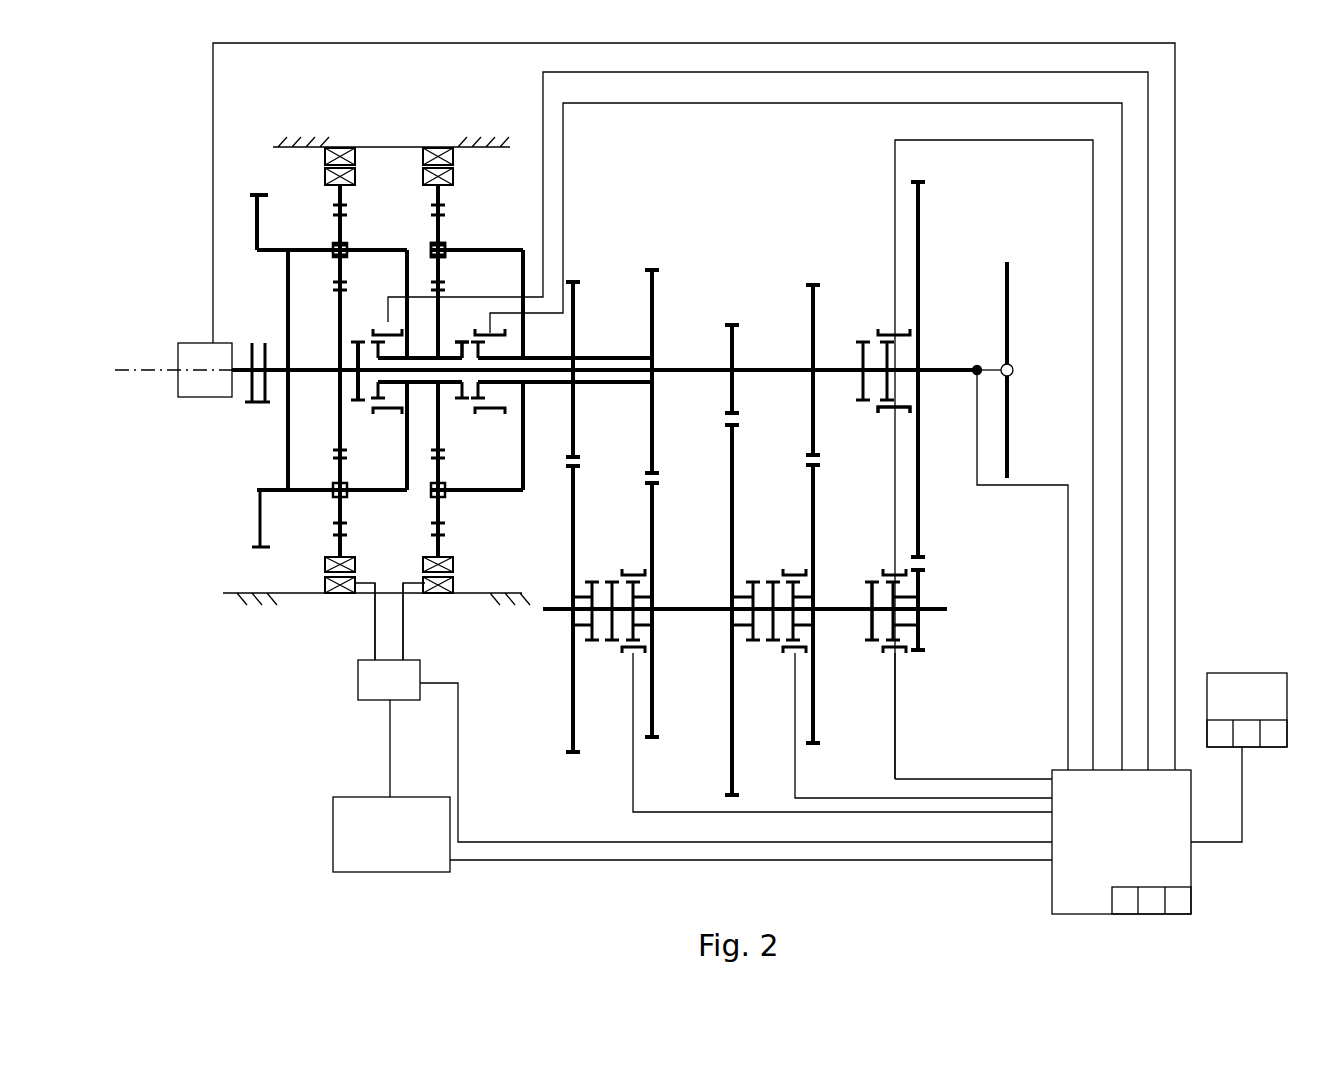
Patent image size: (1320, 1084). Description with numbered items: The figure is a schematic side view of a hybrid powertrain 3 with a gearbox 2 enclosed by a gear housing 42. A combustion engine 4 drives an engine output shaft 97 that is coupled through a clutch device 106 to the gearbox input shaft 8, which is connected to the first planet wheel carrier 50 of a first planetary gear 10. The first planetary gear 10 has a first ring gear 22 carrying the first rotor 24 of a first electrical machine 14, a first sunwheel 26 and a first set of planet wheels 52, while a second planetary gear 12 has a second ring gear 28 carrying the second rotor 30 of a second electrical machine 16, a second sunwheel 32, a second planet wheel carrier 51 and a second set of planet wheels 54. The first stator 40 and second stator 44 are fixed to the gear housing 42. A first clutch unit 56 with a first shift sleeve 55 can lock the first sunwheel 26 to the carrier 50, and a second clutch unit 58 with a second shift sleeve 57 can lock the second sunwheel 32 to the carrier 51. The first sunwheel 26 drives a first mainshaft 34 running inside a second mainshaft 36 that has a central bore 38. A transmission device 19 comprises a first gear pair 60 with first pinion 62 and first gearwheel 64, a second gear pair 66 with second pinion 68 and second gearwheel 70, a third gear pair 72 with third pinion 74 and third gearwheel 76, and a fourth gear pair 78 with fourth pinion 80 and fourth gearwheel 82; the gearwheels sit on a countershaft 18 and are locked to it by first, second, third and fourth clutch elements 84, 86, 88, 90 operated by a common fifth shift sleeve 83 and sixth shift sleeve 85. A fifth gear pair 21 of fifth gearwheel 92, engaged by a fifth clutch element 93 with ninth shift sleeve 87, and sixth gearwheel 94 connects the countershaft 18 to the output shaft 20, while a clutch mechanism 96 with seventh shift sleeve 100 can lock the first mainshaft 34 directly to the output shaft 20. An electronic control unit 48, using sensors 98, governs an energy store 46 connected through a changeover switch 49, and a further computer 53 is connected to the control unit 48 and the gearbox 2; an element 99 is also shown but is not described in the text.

The gearbox 2 is at (1190, 122).
The hybrid powertrain 3 is at (272, 688).
The combustion engine 4 is at (190, 343).
The input shaft 8 is at (266, 344).
The first planetary gear 10 is at (200, 200).
The second planetary gear 12 is at (565, 190).
The first electrical machine 14 is at (205, 128).
The second electrical machine 16 is at (508, 172).
The countershaft 18 is at (710, 615).
The transmission device 19 is at (730, 210).
The output shaft 20 is at (948, 363).
The fifth gear pair 21 is at (955, 560).
The first ring gear 22 is at (330, 208).
The first rotor 24 is at (356, 165).
The first sunwheel 26 is at (338, 395).
The second ring gear 28 is at (445, 208).
The second rotor 30 is at (432, 165).
The second sunwheel 32 is at (440, 328).
The first mainshaft 34 is at (780, 367).
The second mainshaft 36 is at (552, 386).
The central bore 38 is at (655, 375).
The first stator 40 is at (322, 152).
The gear housing 42 is at (423, 152).
The second stator 44 is at (453, 160).
The energy store 46 is at (417, 797).
The electronic control unit 48 is at (1060, 770).
The changeover switch 49 is at (363, 702).
The first planet wheel carrier 50 is at (312, 253).
The second planet wheel carrier 51 is at (524, 462).
The first set of planet wheels 52 is at (343, 262).
The computer 53 is at (1253, 673).
The second set of planet wheels 54 is at (445, 265).
The first splined shift sleeve 55 is at (387, 412).
The first clutch unit 56 is at (372, 340).
The second splined shift sleeve 57 is at (487, 412).
The second clutch unit 58 is at (500, 350).
The first gear pair 60 is at (730, 300).
The first pinion 62 is at (737, 402).
The first gearwheel 64 is at (737, 473).
The second gear pair 66 is at (652, 255).
The second pinion 68 is at (653, 413).
The second gearwheel 70 is at (653, 520).
The third gear pair 72 is at (813, 258).
The third pinion 74 is at (818, 400).
The third gearwheel 76 is at (815, 525).
The fourth gear pair 78 is at (575, 262).
The fourth pinion 80 is at (573, 407).
The fourth gearwheel 82 is at (573, 547).
The fifth shift sleeve 83 is at (795, 572).
The first clutch element 84 is at (755, 645).
The sixth shift sleeve 85 is at (633, 571).
The second clutch element 86 is at (637, 637).
The ninth shift sleeve 87 is at (897, 568).
The third clutch element 88 is at (815, 640).
The fourth clutch element 90 is at (602, 660).
The fifth gearwheel 92 is at (922, 577).
The fifth clutch element 93 is at (922, 640).
The sixth gearwheel 94 is at (922, 478).
The clutch mechanism 96 is at (860, 313).
The engine output shaft 97 is at (242, 378).
The sensors 98 is at (338, 595).
The output gear 99 is at (1010, 313).
The seventh shift sleeve 100 is at (907, 410).
The clutch device 106 is at (260, 410).